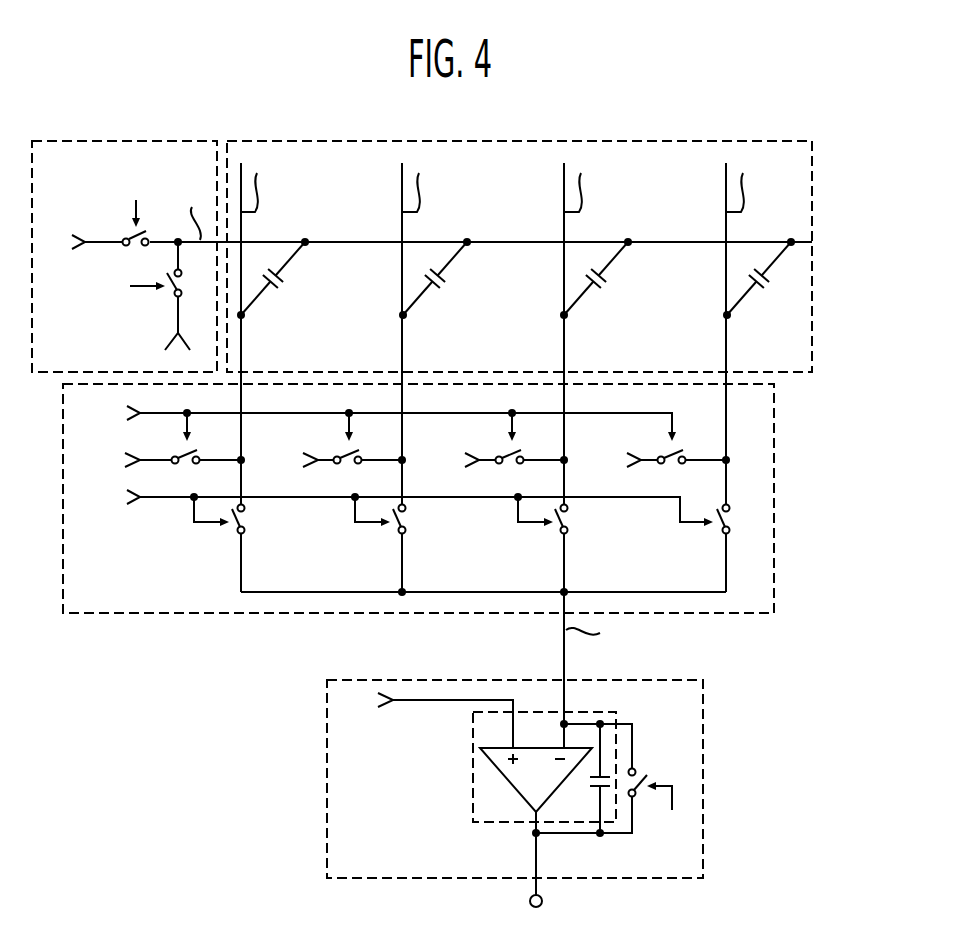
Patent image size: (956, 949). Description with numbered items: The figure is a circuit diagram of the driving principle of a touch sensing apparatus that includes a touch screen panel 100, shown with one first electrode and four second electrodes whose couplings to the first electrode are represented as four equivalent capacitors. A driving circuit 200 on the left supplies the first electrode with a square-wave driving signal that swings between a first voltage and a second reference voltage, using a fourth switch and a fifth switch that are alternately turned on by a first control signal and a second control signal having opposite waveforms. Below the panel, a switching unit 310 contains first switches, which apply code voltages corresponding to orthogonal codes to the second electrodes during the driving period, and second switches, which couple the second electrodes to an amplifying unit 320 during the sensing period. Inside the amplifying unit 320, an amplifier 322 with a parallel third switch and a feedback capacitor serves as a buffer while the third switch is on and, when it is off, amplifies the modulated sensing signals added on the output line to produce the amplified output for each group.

The touch screen panel 100 is at (812, 205).
The driving circuit 200 is at (190, 140).
The switching unit 310 is at (774, 430).
The amplifying unit 320 is at (703, 722).
The amplifier 322 is at (462, 812).